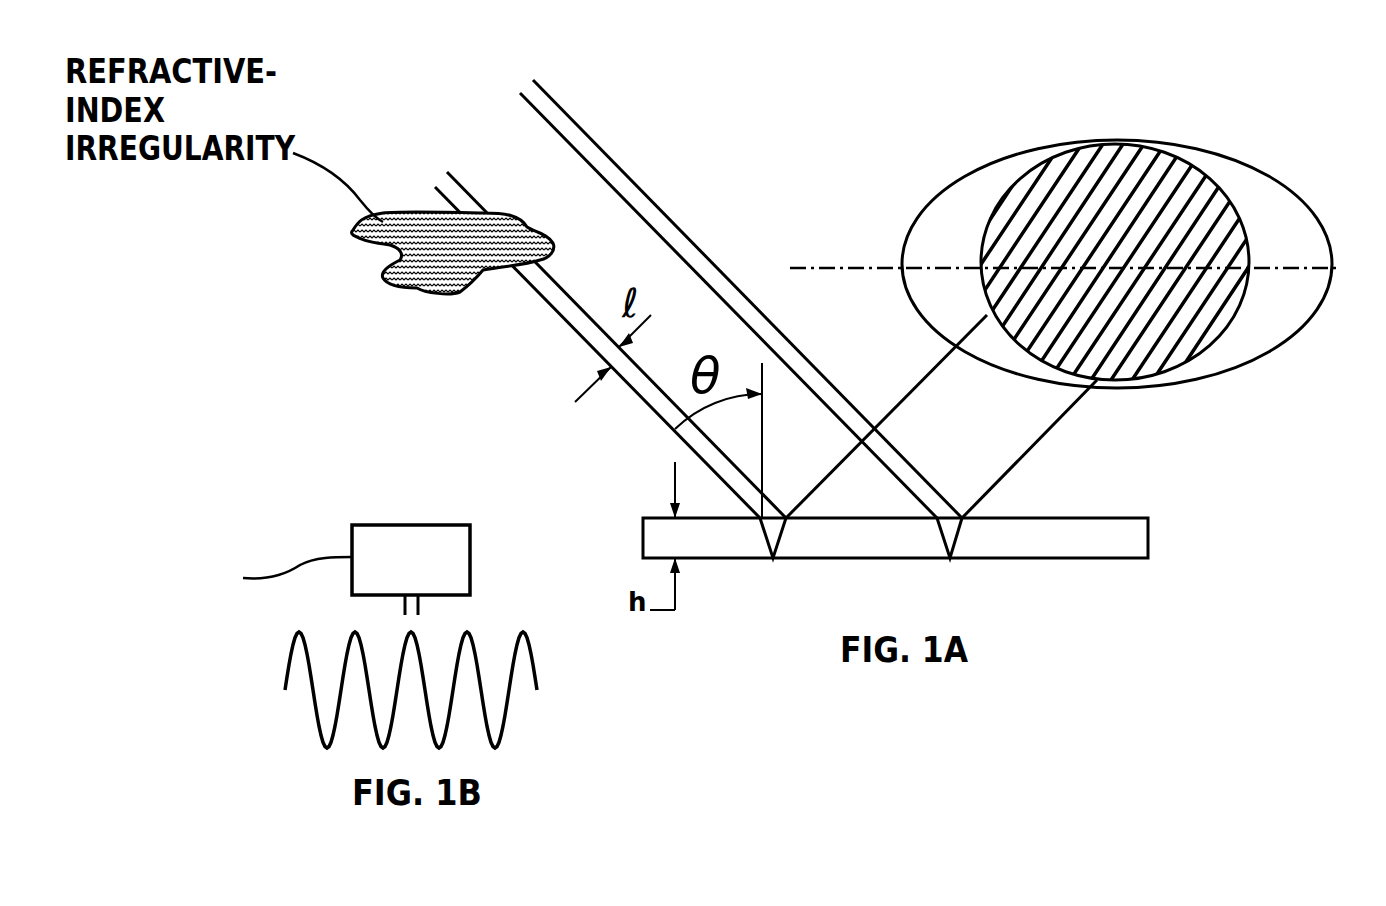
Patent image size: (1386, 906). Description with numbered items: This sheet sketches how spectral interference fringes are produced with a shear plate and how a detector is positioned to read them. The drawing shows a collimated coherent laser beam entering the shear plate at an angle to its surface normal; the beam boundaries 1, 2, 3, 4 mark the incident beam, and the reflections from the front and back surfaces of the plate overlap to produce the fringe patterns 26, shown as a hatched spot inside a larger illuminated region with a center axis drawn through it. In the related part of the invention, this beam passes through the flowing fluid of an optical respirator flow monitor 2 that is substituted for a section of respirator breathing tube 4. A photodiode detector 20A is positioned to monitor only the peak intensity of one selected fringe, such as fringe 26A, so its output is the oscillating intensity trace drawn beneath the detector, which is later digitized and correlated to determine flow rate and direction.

In FIG. 1A, the first incident light beam boundary 1 is at (597, 352).
In FIG. 1A, the optical respirator flow monitor 2 is at (616, 345).
In FIG. 1A, the third incident light beam boundary 3 is at (728, 305).
In FIG. 1A, the respirator breathing tube 4 is at (747, 299).
In FIG. 1A, the fringe patterns 26 is at (1150, 115).
In FIG. 1B, the detector 20A is at (393, 523).
In FIG. 1B, the fringe 26A is at (398, 641).